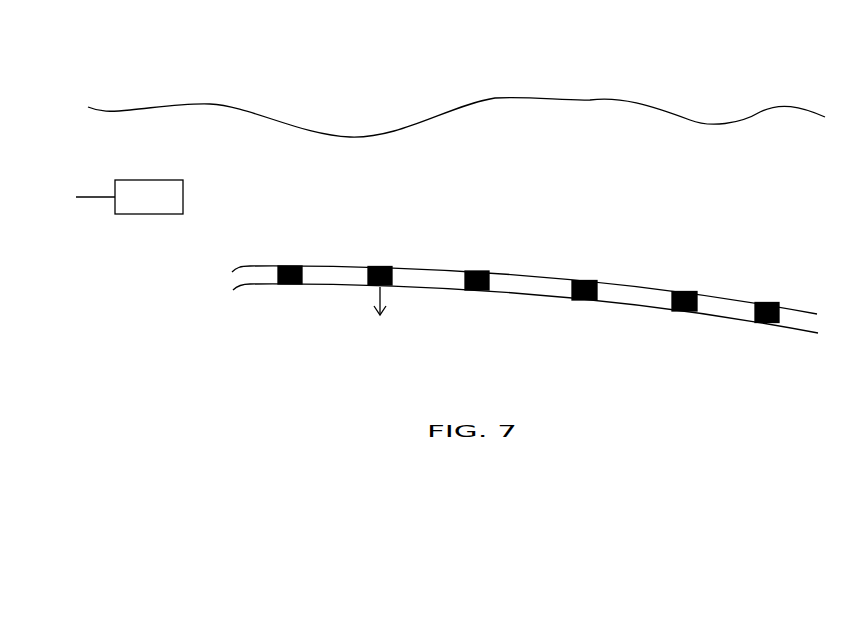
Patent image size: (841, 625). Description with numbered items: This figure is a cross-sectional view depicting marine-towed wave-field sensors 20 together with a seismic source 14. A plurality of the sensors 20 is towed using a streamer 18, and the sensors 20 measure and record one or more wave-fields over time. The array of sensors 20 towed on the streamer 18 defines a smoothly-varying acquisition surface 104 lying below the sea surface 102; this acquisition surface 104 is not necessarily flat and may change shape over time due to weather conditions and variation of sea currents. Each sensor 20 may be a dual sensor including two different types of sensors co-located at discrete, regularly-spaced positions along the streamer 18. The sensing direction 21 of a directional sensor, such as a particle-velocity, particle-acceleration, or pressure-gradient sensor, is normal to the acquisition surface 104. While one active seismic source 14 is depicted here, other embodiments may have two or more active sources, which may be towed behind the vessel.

The seismic source 14 is at (129, 198).
The streamer 18 is at (256, 276).
The wave-field sensors 20 is at (477, 270).
The sensing direction 21 is at (422, 327).
The sea surface 102 is at (585, 100).
The acquisition surface 104 is at (632, 302).